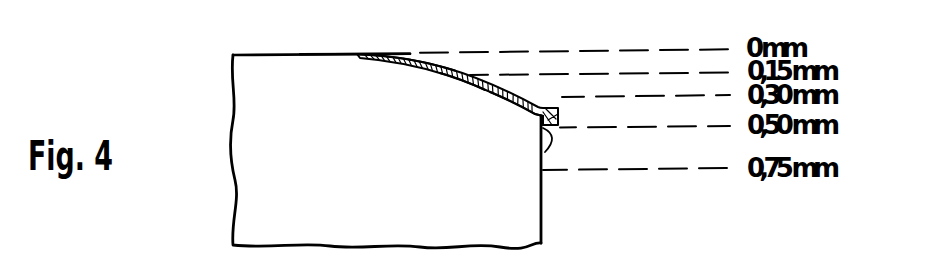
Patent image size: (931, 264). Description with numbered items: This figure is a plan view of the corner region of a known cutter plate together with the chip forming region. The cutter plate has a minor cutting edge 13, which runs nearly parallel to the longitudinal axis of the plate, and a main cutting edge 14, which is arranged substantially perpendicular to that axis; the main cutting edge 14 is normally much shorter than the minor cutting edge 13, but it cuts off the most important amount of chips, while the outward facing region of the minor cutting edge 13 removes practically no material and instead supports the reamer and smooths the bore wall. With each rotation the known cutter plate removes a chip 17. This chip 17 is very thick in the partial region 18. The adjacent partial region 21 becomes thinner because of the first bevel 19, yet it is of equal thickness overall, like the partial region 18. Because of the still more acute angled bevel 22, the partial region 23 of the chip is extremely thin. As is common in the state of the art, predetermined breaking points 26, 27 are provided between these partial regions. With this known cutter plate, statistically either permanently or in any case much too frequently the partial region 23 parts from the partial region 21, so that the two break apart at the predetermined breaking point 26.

The minor cutting edge 13 is at (269, 54).
The main cutting edge 14 is at (543, 160).
The chip 17 is at (461, 71).
The partial region 18 is at (540, 133).
The first bevel 19 is at (480, 92).
The partial region 21 is at (510, 88).
The bevel 22 is at (368, 58).
The partial region 23 is at (392, 54).
The predetermined breaking point 26 is at (538, 112).
The predetermined breaking point 27 is at (432, 62).